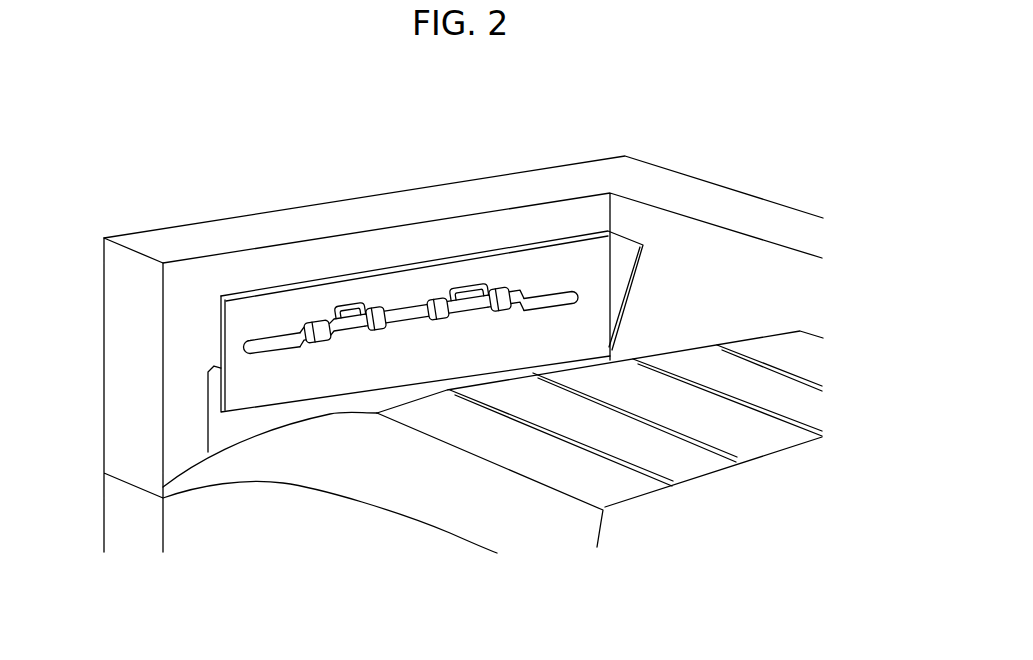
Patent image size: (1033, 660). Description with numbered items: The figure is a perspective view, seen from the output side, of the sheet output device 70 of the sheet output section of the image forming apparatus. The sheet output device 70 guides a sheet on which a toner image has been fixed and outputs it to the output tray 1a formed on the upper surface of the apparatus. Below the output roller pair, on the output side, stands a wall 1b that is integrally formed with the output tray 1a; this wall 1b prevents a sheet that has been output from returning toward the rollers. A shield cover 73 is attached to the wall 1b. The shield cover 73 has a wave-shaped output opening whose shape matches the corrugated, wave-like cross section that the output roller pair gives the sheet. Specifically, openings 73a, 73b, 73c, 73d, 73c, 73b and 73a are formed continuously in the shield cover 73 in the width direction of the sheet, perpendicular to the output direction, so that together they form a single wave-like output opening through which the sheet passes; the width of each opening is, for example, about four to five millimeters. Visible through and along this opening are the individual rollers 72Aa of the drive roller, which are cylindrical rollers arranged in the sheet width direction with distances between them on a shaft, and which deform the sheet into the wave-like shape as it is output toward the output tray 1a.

The sheet output device 70 is at (375, 118).
The output tray 1a is at (733, 440).
The wall 1b is at (235, 422).
The shield cover 73 is at (235, 353).
The opening 73a is at (275, 346).
The opening 73b is at (520, 300).
The opening 73c is at (353, 303).
The opening 73d is at (413, 322).
The individual rollers 72Aa is at (322, 340).